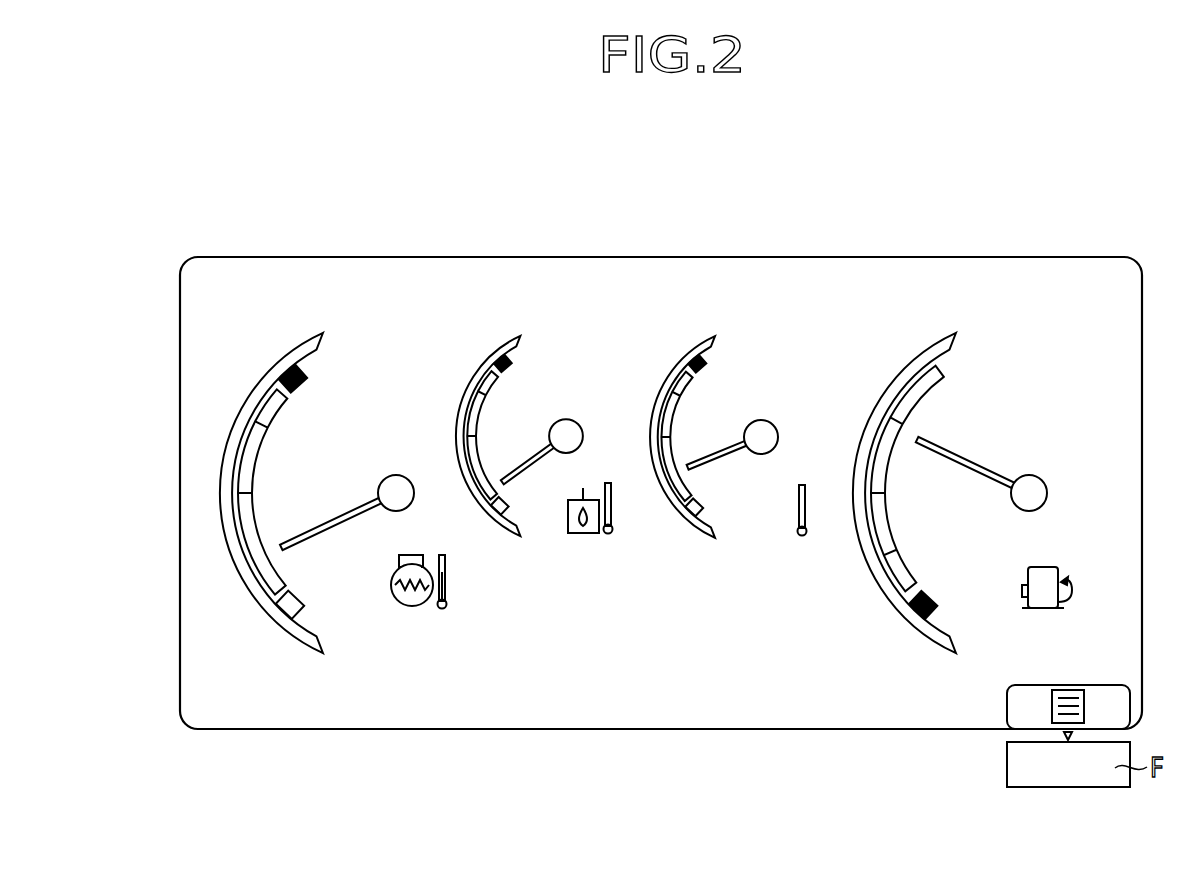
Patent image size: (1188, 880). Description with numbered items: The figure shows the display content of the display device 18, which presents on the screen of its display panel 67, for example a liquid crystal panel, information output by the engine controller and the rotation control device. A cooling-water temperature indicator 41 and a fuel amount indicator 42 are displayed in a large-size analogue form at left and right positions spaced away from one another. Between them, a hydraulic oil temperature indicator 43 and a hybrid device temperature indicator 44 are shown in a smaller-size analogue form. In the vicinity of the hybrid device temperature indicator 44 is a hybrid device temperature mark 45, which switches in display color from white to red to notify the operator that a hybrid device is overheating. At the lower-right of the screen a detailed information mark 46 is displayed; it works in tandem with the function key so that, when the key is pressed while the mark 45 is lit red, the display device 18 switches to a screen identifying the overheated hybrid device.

The display device 18 is at (806, 208).
The cooling-water temperature indicator 41 is at (254, 333).
The fuel amount indicator 42 is at (908, 333).
The hydraulic oil temperature indicator 43 is at (461, 330).
The hybrid device temperature indicator 44 is at (676, 333).
The hybrid device temperature mark 45 is at (775, 543).
The detailed information mark 46 is at (1030, 695).
The display panel 67 is at (580, 712).